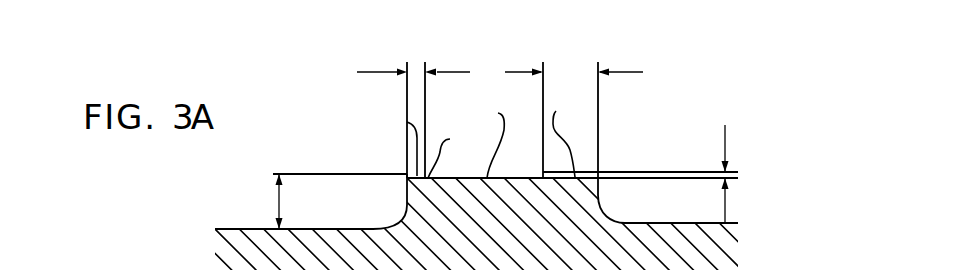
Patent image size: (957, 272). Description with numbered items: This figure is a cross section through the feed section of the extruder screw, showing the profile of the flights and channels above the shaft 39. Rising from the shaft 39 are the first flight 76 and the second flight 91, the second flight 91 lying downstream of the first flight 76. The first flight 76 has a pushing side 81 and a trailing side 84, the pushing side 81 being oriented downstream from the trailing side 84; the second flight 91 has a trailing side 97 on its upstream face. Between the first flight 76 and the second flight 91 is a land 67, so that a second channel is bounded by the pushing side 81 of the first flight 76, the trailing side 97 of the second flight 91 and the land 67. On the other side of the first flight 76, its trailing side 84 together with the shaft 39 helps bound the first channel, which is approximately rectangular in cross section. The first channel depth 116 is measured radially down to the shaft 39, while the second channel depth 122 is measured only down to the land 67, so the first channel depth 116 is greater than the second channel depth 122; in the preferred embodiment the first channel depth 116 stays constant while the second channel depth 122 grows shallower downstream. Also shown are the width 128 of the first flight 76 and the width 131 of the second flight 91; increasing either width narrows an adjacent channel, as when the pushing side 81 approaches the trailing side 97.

The shaft 39 is at (239, 228).
The first channel depth 116 is at (278, 202).
The width of second flight 131 is at (372, 71).
The pushing side 81 is at (540, 177).
The width of first flight 128 is at (628, 71).
The second flight 91 is at (403, 121).
The trailing side 97 is at (450, 139).
The land 67 is at (498, 113).
The first flight 76 is at (556, 111).
The second channel depth 122 is at (727, 131).
The trailing side 84 is at (603, 190).